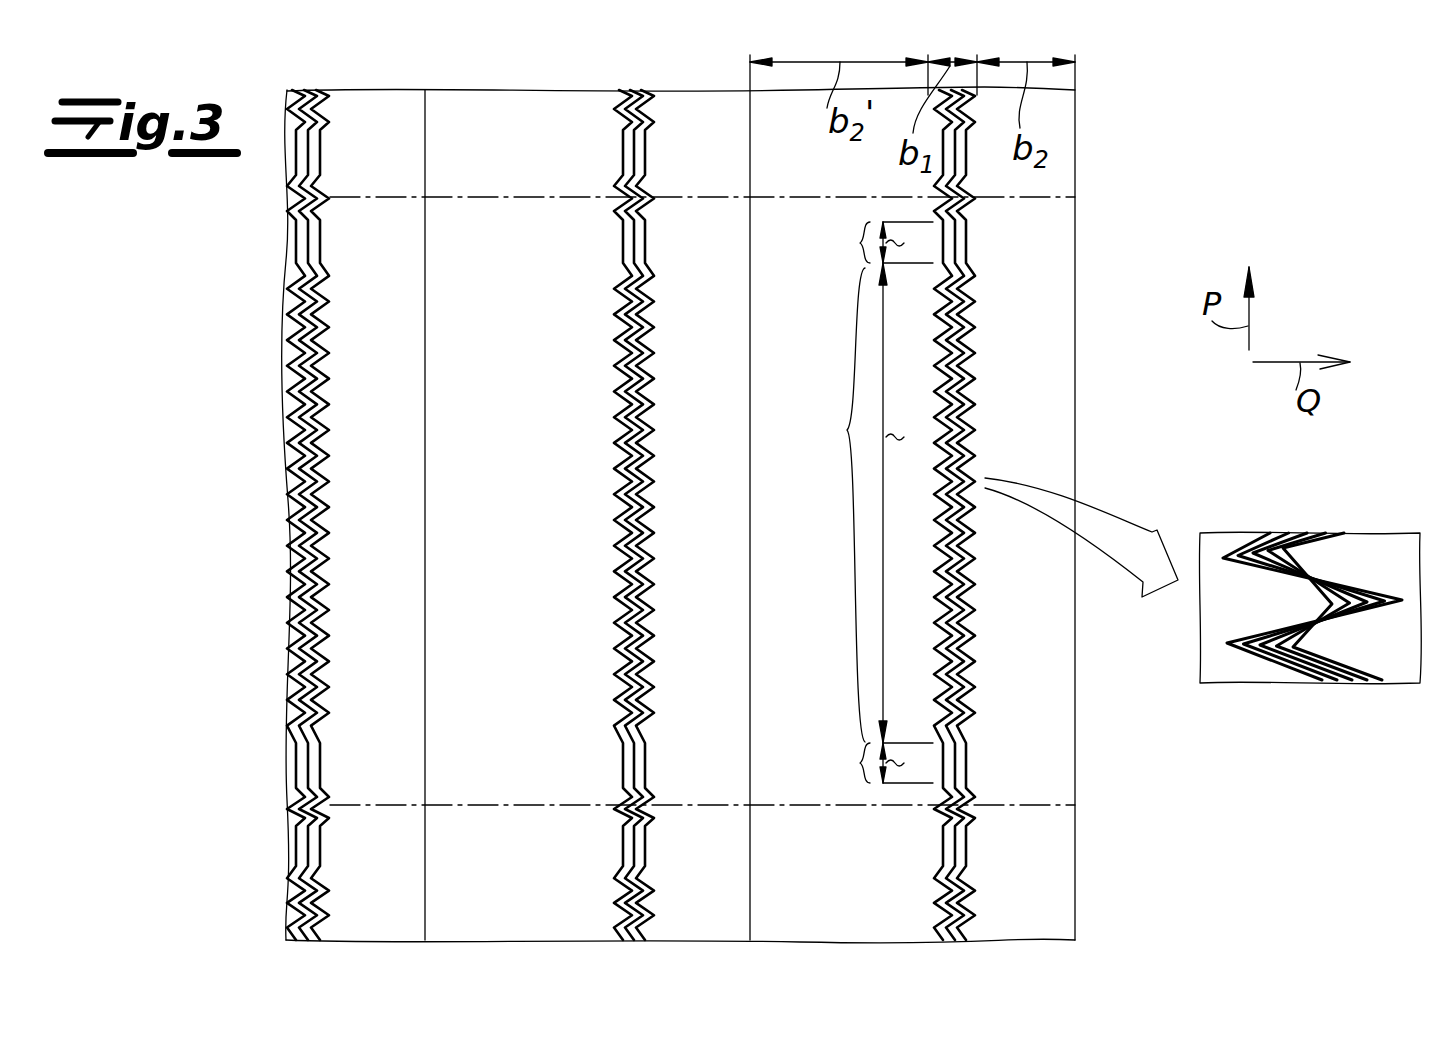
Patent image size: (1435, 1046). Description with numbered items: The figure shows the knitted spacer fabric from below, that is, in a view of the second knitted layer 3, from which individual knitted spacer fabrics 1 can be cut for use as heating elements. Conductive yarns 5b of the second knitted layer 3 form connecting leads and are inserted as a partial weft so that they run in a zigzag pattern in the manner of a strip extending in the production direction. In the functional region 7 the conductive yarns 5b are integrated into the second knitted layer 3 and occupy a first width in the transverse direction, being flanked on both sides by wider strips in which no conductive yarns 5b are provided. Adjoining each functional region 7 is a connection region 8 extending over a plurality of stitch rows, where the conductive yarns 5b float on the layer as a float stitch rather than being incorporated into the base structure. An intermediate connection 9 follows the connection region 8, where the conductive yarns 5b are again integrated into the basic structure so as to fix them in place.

The knitted spacer fabric 1 is at (1068, 720).
The second knitted layer 3 is at (1057, 241).
The conductive yarns 5b is at (973, 446).
The functional region 7 is at (871, 503).
The connection region 8 is at (883, 505).
The intermediate connection 9 is at (980, 189).